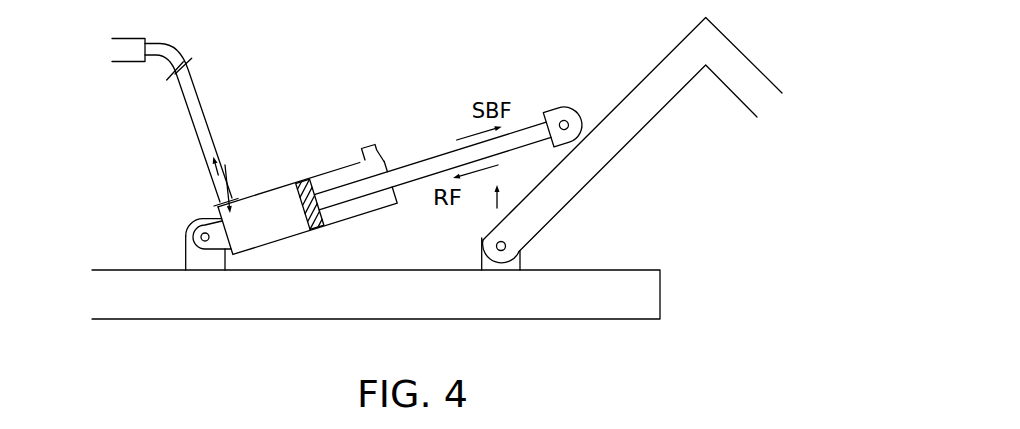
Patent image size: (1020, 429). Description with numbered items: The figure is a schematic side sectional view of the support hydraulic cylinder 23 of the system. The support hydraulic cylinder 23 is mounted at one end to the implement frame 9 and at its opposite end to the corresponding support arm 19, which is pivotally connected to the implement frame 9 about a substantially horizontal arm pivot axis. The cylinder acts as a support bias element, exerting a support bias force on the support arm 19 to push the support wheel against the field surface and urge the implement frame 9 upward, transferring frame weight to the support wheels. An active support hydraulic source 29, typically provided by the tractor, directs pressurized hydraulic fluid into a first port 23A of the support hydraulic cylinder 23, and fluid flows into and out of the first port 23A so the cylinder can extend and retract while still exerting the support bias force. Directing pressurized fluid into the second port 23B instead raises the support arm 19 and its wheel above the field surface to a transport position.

The implement frame 9 is at (472, 320).
The support arm 19 is at (660, 111).
The support hydraulic cylinder 23 is at (281, 241).
The first port 23A is at (218, 204).
The second port 23B is at (371, 146).
The active support hydraulic source 29 is at (133, 38).